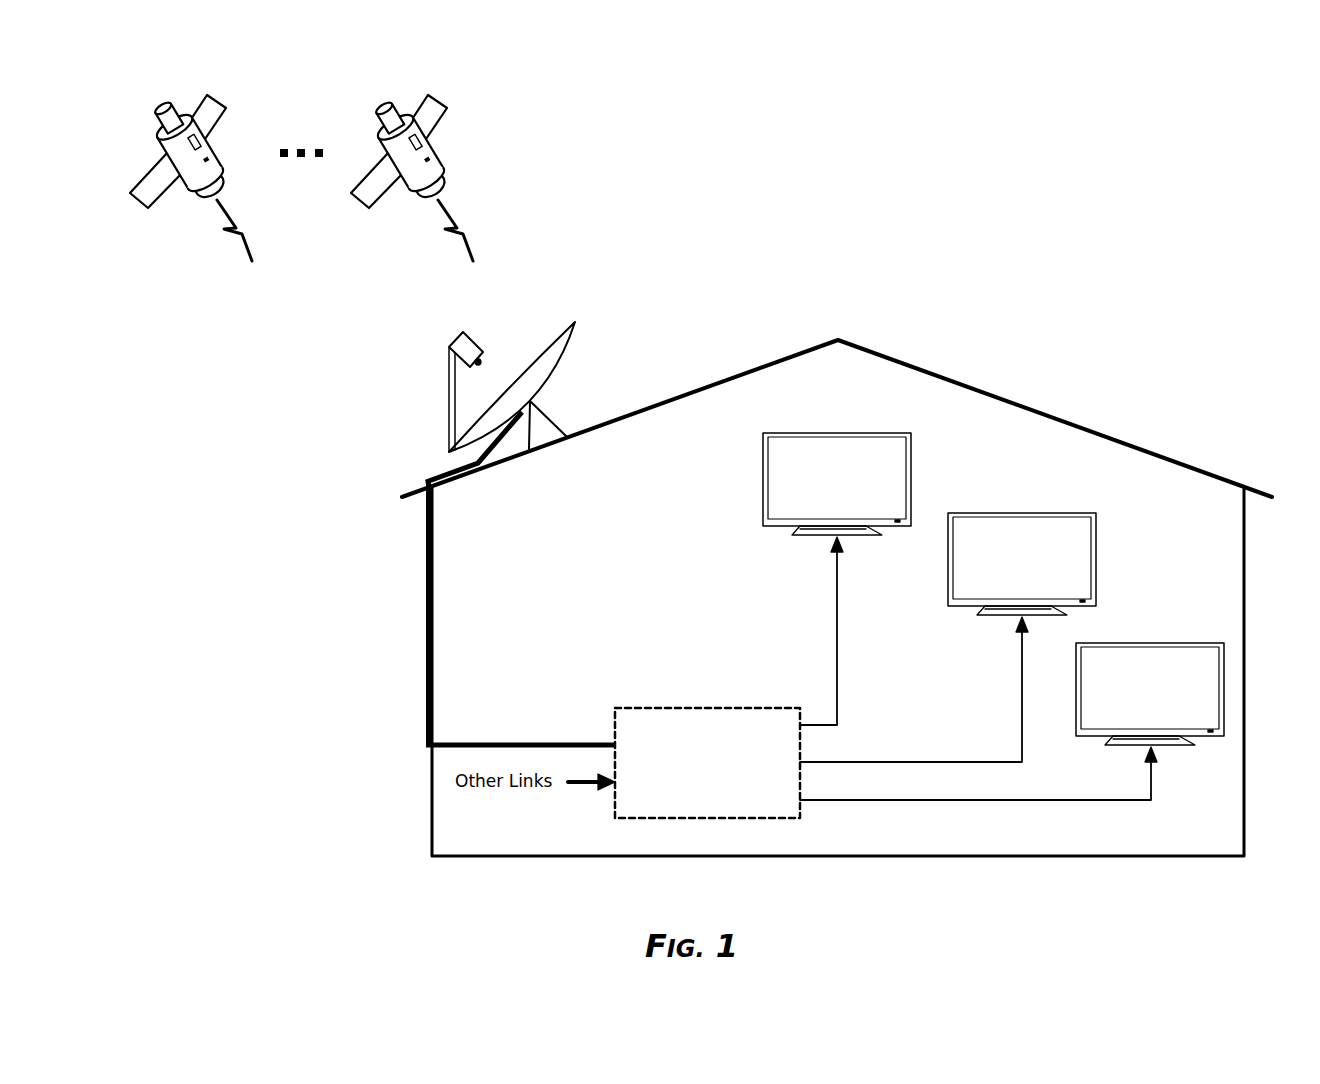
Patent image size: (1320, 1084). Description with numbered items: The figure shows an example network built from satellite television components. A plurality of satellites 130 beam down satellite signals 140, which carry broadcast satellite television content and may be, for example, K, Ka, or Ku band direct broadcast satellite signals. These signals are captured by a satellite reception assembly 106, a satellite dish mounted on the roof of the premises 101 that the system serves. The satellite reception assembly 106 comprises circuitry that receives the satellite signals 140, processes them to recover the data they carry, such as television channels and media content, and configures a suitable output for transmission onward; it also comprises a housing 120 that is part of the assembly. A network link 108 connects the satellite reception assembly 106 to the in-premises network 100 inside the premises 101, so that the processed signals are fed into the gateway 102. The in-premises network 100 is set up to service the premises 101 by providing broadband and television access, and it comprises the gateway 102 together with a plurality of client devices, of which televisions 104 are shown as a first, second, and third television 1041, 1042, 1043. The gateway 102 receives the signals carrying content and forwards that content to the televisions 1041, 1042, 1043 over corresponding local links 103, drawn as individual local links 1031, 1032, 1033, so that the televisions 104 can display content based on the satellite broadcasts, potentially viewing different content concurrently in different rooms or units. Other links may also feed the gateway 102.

The in-premises network 100 is at (978, 353).
The premises 101 is at (1108, 435).
The gateway 102 is at (692, 797).
The local links 103 is at (978, 687).
The local link 1031 is at (830, 726).
The local link 1032 is at (950, 764).
The local link 1033 is at (1097, 802).
The televisions 104 is at (993, 589).
The television 1041 is at (837, 484).
The television 1042 is at (1022, 564).
The television 1043 is at (1150, 694).
The satellite reception assembly 106 is at (558, 364).
The network link 108 is at (426, 597).
The housing 120 is at (480, 340).
The satellites 130 is at (301, 92).
The satellite signals 140 is at (377, 330).